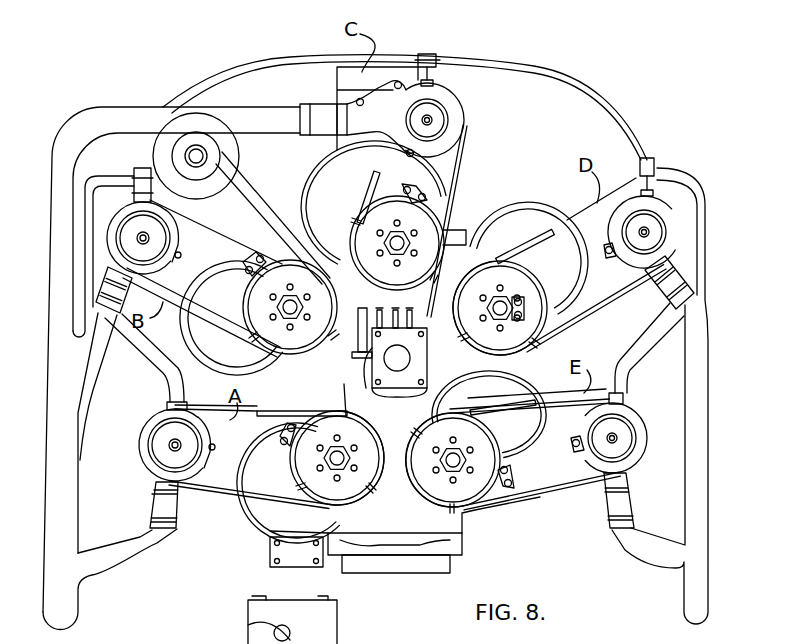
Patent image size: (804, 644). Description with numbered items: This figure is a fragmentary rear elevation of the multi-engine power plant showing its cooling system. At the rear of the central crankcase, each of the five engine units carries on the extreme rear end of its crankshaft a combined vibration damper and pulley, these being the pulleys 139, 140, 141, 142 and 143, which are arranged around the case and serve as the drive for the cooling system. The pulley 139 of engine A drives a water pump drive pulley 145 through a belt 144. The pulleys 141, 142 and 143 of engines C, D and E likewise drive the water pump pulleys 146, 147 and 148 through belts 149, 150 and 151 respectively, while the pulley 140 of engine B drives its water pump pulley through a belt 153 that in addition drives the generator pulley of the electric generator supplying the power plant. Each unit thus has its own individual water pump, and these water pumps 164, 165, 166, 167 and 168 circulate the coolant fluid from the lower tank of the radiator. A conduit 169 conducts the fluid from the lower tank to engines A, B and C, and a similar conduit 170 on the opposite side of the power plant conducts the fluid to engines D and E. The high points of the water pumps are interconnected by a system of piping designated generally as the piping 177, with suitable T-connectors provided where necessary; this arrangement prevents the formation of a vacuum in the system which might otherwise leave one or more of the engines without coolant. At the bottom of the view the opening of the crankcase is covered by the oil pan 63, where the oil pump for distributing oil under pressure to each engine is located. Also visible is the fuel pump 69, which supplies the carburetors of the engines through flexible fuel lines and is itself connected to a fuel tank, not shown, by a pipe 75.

The oil pan 63 is at (422, 572).
The fuel pump 69 is at (425, 342).
The pipe 75 is at (358, 343).
The combined vibration damper and pulley 139 is at (365, 492).
The combined vibration damper and pulley 140 is at (337, 300).
The combined vibration damper and pulley 141 is at (422, 280).
The combined vibration damper and pulley 142 is at (533, 281).
The combined vibration damper and pulley 143 is at (487, 450).
The belt 144 is at (298, 393).
The water pump drive pulley 145 is at (148, 453).
The water pump pulley 146 is at (462, 122).
The water pump pulley 147 is at (697, 212).
The water pump pulley 148 is at (644, 457).
The belt 149 is at (455, 178).
The belt 150 is at (586, 308).
The belt 151 is at (525, 492).
The belt 153 is at (250, 190).
The water pump 164 is at (184, 405).
The water pump 165 is at (167, 240).
The water pump 166 is at (408, 94).
The water pump 167 is at (636, 175).
The water pump 168 is at (631, 397).
The conduit 169 is at (67, 599).
The conduit 170 is at (689, 607).
The system of piping 177 is at (612, 98).